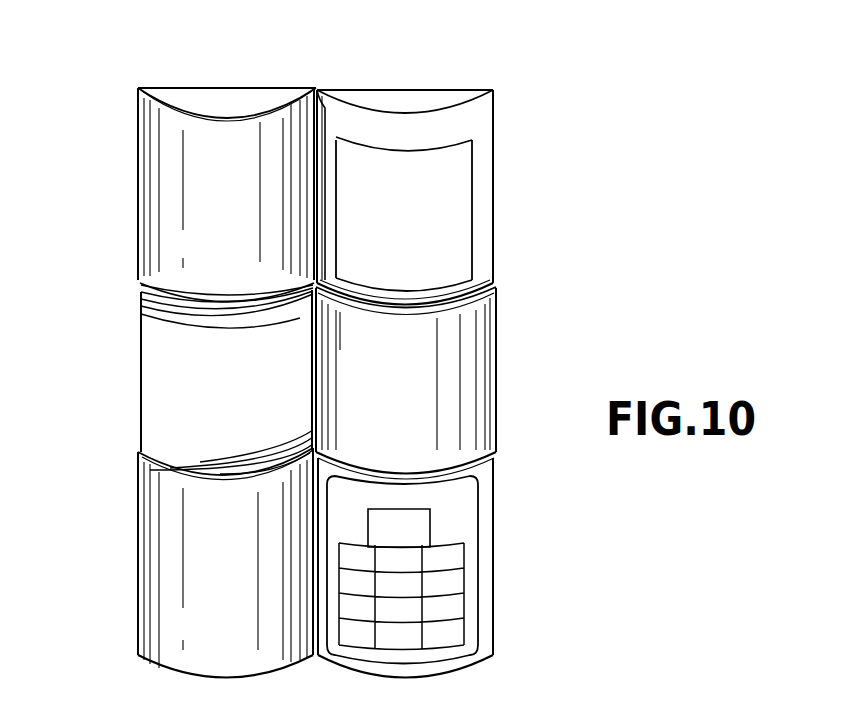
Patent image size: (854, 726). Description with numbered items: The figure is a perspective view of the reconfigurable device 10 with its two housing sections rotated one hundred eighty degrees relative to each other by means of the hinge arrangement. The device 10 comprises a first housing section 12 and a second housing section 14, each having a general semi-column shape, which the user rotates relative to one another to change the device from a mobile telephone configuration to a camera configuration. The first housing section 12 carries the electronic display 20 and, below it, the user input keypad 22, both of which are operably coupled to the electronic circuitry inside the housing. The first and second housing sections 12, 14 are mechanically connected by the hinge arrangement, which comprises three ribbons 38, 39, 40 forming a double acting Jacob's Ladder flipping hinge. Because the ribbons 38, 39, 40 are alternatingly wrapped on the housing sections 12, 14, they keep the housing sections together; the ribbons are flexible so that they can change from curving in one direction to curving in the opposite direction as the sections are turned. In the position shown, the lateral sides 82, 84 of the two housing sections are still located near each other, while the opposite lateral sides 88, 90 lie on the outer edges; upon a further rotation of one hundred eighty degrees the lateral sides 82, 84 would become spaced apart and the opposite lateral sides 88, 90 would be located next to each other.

The device 10 is at (91, 118).
The first housing section 12 is at (480, 233).
The second housing section 14 is at (140, 368).
The electronic display 20 is at (457, 176).
The keypad 22 is at (463, 597).
The ribbon 38 is at (478, 378).
The ribbon 39 is at (161, 233).
The ribbon 40 is at (155, 588).
The lateral side 82 is at (326, 92).
The lateral side 84 is at (312, 92).
The opposite lateral side 88 is at (494, 117).
The opposite lateral side 90 is at (143, 300).